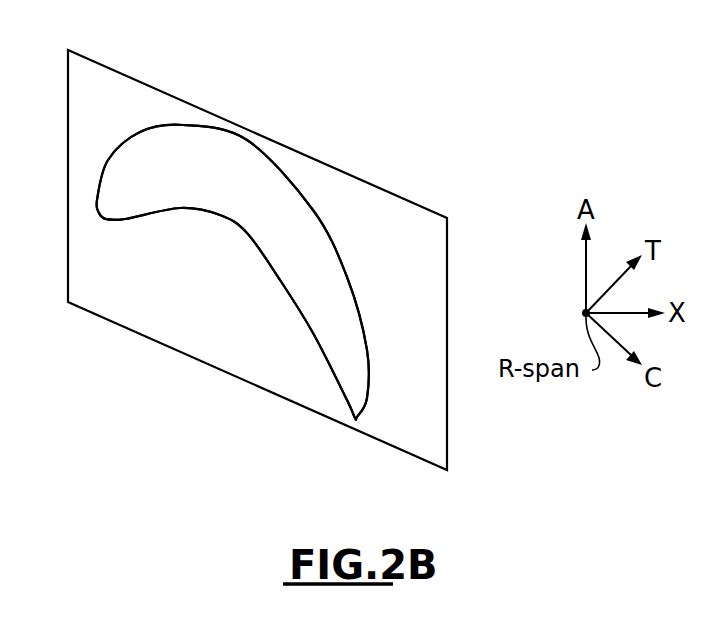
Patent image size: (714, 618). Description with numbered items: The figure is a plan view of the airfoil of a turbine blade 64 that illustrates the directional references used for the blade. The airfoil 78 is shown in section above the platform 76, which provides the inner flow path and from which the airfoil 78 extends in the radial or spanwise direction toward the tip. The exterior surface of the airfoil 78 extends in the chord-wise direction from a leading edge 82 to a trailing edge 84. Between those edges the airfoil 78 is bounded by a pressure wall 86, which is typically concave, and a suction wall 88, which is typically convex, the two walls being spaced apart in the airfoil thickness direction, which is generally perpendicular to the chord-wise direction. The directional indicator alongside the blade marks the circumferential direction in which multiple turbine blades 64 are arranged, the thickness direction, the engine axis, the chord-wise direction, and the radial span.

The turbine blade 64 is at (406, 114).
The platform 76 is at (152, 76).
The airfoil 78 is at (103, 230).
The leading edge 82 is at (98, 213).
The trailing edge 84 is at (357, 419).
The pressure wall 86 is at (247, 233).
The suction wall 88 is at (243, 140).